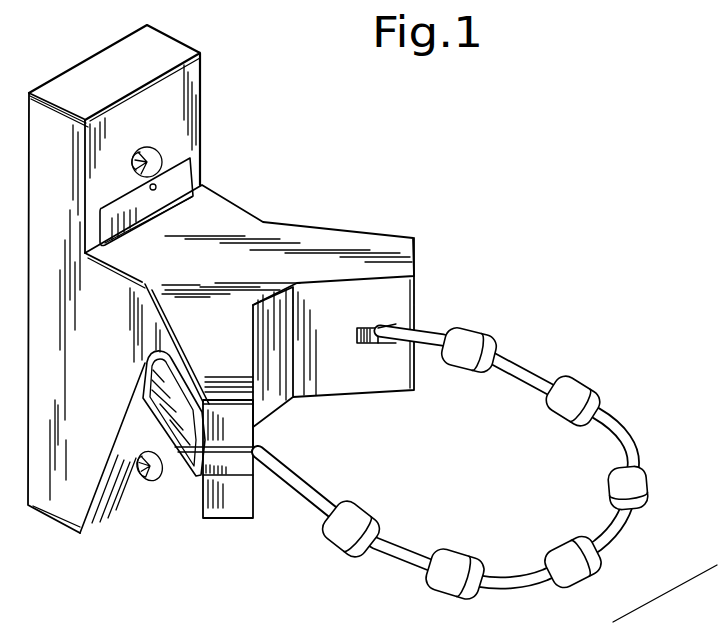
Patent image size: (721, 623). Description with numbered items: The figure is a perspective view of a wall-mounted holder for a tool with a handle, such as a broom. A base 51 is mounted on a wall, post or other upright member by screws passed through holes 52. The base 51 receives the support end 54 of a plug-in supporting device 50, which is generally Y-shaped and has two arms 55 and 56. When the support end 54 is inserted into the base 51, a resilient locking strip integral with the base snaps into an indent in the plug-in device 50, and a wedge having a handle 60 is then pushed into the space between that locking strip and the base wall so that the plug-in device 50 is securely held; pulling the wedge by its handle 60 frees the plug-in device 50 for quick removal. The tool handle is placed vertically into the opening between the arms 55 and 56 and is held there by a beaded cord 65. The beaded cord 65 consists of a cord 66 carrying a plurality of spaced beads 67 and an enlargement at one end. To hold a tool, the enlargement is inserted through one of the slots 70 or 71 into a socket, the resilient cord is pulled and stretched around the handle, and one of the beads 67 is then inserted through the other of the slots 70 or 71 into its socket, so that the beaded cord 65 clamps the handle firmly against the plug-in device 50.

The plug-in supporting device 50 is at (253, 341).
The base 51 is at (195, 90).
The holes 52 is at (153, 149).
The support end 54 is at (207, 213).
The arm 55 is at (397, 238).
The arm 56 is at (240, 510).
The handle 60 is at (188, 176).
The beaded cord 65 is at (499, 462).
The cord 66 is at (517, 566).
The beads 67 is at (483, 342).
The slot 70 is at (272, 460).
The slot 71 is at (377, 327).